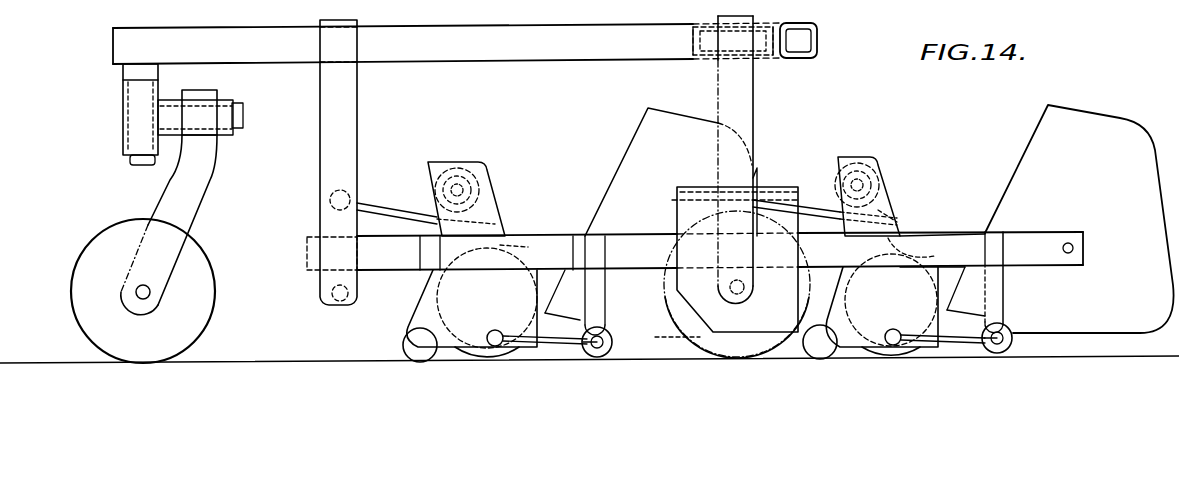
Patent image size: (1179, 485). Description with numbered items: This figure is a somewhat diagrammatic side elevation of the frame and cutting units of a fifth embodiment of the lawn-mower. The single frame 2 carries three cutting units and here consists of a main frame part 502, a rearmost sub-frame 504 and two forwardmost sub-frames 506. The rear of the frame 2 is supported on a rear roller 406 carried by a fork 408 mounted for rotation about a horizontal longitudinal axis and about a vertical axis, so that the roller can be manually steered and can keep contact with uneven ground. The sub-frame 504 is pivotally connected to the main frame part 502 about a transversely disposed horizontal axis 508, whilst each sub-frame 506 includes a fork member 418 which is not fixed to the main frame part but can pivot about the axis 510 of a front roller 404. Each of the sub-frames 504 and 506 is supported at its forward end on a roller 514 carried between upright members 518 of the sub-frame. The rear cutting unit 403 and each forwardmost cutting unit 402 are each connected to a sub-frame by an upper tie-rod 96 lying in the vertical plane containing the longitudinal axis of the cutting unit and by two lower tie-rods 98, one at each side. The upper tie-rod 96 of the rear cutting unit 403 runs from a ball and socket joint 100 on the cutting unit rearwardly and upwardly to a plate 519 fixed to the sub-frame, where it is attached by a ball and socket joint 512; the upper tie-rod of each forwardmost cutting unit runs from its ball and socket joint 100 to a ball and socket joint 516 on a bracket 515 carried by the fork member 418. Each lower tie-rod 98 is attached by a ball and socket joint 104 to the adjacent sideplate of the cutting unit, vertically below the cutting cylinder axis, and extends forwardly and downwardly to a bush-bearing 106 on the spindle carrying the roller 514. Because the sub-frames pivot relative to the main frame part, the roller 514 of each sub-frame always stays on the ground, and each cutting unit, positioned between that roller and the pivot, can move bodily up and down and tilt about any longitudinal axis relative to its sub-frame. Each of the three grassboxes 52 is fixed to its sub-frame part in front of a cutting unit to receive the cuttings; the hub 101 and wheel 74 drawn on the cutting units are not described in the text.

The frame 2 is at (512, 60).
The main frame part 502 is at (663, 56).
The grassbox 52 is at (648, 115).
The fork 408 is at (200, 199).
The rear roller 406 is at (220, 260).
The ball and socket joint 512 is at (350, 193).
The transversely disposed horizontal axis 508 is at (335, 290).
The plate 519 is at (318, 220).
The rearmost sub-frame 504 is at (384, 252).
The ball and socket joint 100 is at (497, 217).
The upper tie-rod 96 is at (400, 215).
The pivot hub 101 is at (691, 212).
The rear cutting unit 403 is at (433, 317).
The depth wheel 74 is at (405, 344).
The ball and socket joint 104 is at (494, 330).
The lower tie-rod 98 is at (555, 344).
The upright member 518 is at (597, 302).
The bush-bearing 106 is at (605, 333).
The roller 514 is at (612, 342).
The ball and socket joint 516 is at (759, 185).
The axis of the roller 510 is at (730, 286).
The bracket 515 is at (716, 199).
The front roller 404 is at (743, 341).
The fork member 418 is at (712, 318).
The forwardmost sub-frame 506 is at (931, 238).
The cutting unit 402 is at (912, 290).